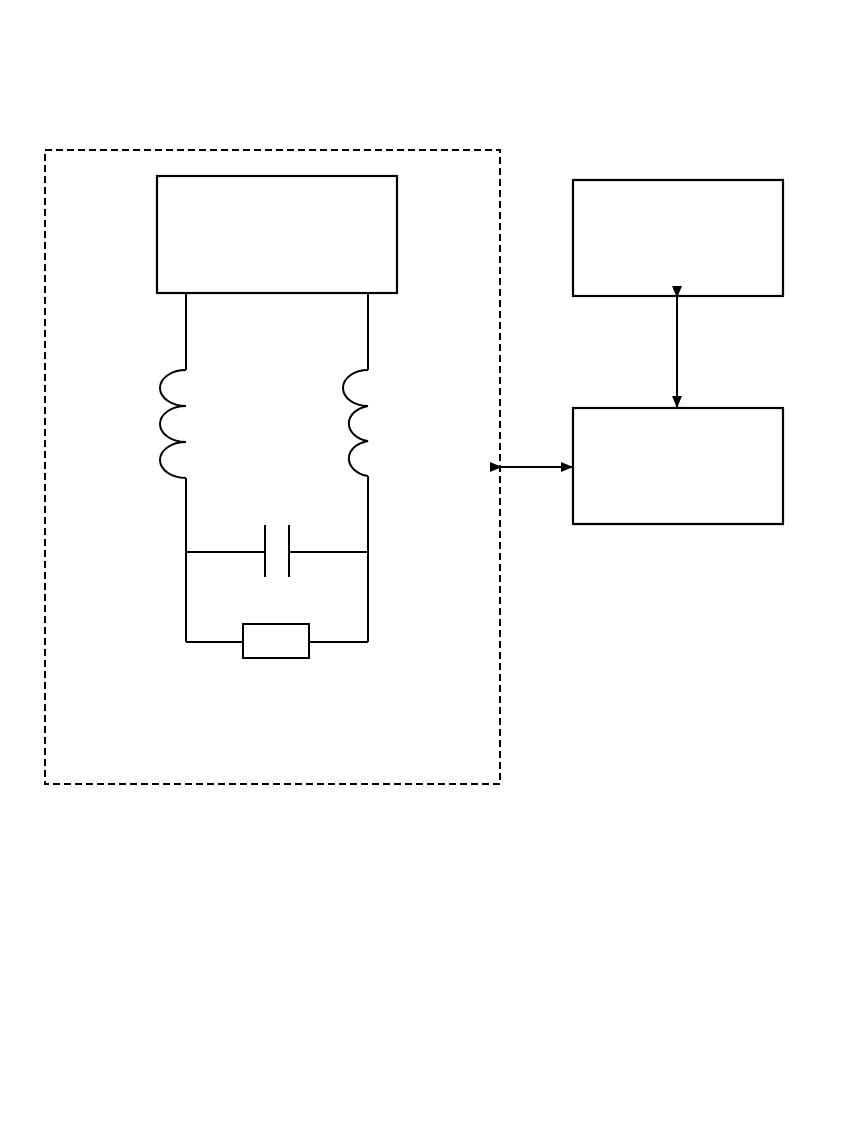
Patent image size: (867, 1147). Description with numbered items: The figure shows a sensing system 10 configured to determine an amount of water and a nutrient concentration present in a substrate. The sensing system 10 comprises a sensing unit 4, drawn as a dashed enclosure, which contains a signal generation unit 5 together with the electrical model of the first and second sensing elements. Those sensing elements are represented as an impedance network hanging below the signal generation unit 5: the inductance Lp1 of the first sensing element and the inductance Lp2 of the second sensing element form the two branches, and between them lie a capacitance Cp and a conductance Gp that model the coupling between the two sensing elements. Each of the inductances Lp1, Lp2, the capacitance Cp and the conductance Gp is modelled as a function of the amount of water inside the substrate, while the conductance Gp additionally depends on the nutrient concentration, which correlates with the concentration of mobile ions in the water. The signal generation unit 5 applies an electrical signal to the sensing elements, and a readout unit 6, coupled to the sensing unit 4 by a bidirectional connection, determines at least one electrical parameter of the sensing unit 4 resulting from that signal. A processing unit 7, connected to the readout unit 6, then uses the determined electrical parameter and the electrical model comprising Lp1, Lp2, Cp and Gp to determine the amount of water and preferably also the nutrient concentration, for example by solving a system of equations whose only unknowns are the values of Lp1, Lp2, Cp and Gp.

The sensing system 10 is at (73, 34).
The sensing unit 4 is at (348, 149).
The signal generation unit 5 is at (287, 252).
The readout unit 6 is at (688, 483).
The processing unit 7 is at (688, 255).
The inductance of the first sensing element Lp1 is at (157, 388).
The inductance of the second sensing element Lp2 is at (362, 393).
The capacitance Cp is at (275, 523).
The conductance Gp is at (283, 658).